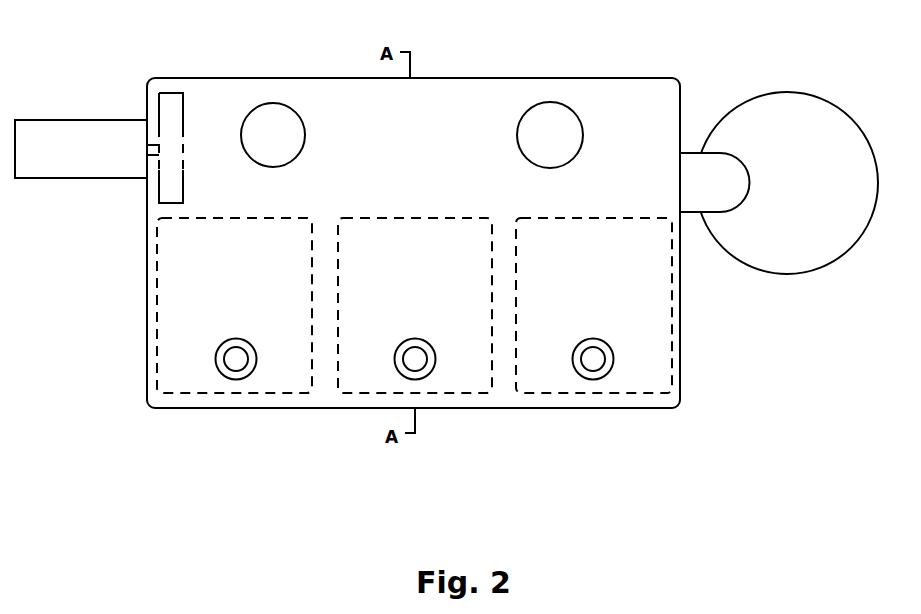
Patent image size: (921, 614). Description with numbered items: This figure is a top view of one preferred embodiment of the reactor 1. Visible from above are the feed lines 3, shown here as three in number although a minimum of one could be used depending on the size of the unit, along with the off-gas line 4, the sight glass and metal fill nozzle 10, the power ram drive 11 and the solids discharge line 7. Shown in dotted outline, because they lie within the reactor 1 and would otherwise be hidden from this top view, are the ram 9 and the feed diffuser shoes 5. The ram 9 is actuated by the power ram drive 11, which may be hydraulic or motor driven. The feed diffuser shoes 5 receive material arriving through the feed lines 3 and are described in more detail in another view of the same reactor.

The reactor 1 is at (352, 77).
The feed lines 3 is at (578, 377).
The off-gas line 4 is at (530, 103).
The feed diffuser shoes 5 is at (290, 400).
The solids discharge line 7 is at (735, 155).
The ram 9 is at (182, 90).
The sight glass and metal fill nozzle 10 is at (280, 100).
The power ram drive 11 is at (88, 118).